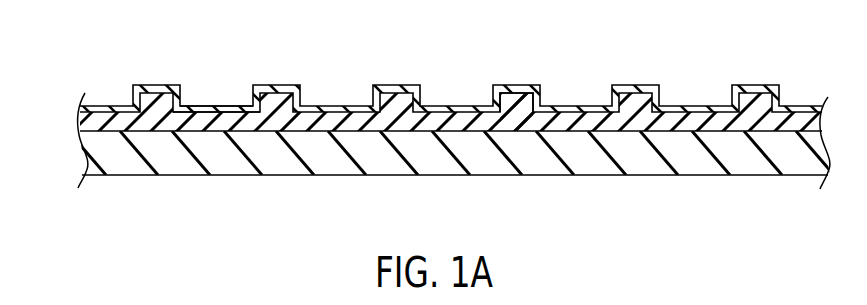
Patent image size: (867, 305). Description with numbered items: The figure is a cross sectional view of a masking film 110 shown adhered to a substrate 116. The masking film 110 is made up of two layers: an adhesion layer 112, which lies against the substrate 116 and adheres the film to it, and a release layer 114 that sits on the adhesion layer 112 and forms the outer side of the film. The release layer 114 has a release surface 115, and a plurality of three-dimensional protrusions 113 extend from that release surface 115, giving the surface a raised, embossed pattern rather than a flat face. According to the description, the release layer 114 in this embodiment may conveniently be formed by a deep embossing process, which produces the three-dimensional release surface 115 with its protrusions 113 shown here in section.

The masking film 110 is at (72, 85).
The adhesion layer 112 is at (223, 108).
The three-dimensional protrusions 113 is at (540, 85).
The release layer 114 is at (455, 105).
The release surface 115 is at (510, 79).
The substrate 116 is at (230, 163).